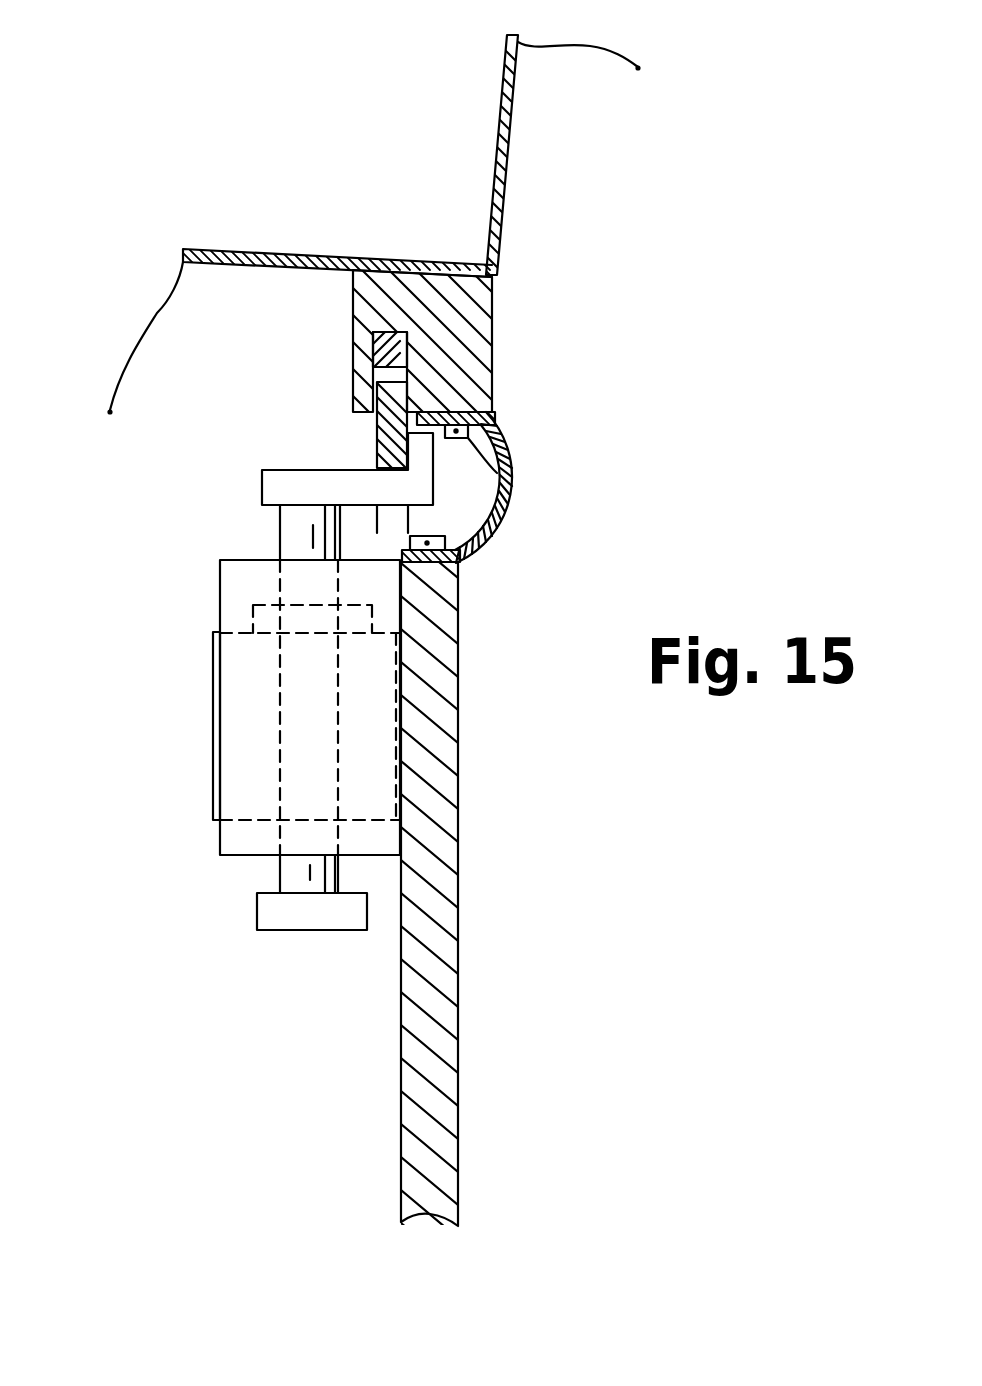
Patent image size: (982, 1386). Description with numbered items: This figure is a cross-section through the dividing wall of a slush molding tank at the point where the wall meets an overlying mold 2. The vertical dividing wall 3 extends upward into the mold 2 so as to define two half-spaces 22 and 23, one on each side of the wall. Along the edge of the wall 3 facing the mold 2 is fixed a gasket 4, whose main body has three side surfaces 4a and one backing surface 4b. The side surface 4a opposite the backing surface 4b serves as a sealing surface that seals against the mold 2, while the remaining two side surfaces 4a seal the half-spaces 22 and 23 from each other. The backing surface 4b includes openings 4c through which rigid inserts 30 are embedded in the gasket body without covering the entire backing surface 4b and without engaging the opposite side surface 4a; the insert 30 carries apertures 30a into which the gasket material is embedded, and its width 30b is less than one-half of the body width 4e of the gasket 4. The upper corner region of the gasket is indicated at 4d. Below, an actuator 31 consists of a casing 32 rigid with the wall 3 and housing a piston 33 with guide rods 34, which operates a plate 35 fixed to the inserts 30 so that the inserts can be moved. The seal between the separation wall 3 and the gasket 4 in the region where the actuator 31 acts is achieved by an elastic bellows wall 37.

The mold 2 is at (490, 92).
The vertical dividing wall 3 is at (430, 905).
The gasket 4 is at (506, 317).
The side surface 4a is at (430, 262).
The backing surface 4b is at (497, 474).
The opening 4c is at (358, 377).
The upper corner of support 4d is at (494, 288).
The body width 4e is at (361, 147).
The half-space 22 is at (215, 1077).
The half-space 23 is at (602, 1077).
The rigid insert 30 is at (376, 432).
The aperture 30a is at (478, 390).
The insert width 30b is at (377, 516).
The actuator 31 is at (184, 708).
The casing 32 is at (237, 843).
The piston 33 is at (250, 650).
The guide rod 34 is at (290, 533).
The plate 35 is at (290, 483).
The bellows wall 37 is at (513, 450).